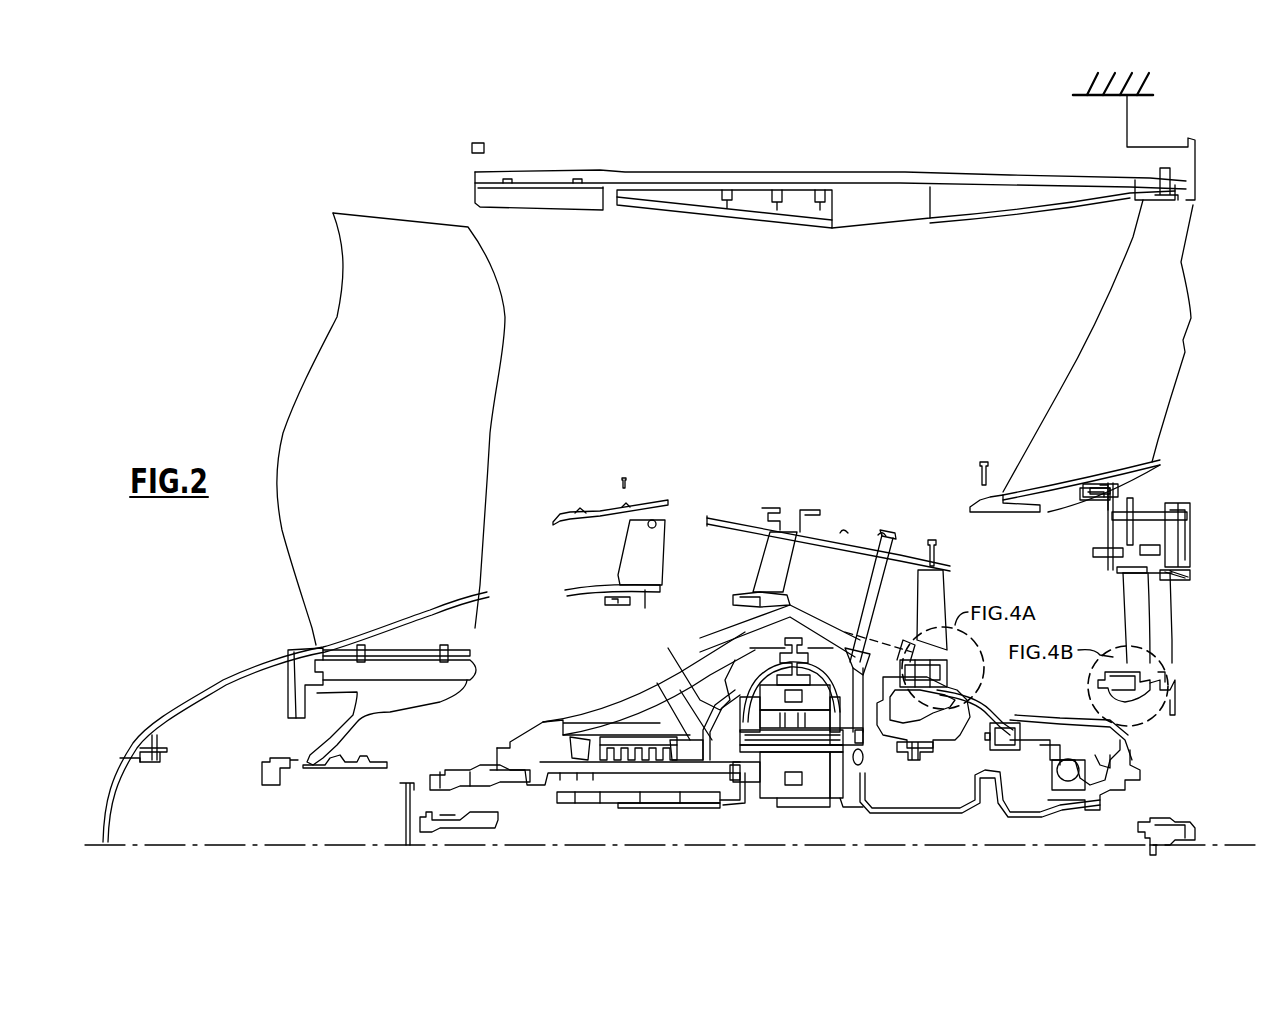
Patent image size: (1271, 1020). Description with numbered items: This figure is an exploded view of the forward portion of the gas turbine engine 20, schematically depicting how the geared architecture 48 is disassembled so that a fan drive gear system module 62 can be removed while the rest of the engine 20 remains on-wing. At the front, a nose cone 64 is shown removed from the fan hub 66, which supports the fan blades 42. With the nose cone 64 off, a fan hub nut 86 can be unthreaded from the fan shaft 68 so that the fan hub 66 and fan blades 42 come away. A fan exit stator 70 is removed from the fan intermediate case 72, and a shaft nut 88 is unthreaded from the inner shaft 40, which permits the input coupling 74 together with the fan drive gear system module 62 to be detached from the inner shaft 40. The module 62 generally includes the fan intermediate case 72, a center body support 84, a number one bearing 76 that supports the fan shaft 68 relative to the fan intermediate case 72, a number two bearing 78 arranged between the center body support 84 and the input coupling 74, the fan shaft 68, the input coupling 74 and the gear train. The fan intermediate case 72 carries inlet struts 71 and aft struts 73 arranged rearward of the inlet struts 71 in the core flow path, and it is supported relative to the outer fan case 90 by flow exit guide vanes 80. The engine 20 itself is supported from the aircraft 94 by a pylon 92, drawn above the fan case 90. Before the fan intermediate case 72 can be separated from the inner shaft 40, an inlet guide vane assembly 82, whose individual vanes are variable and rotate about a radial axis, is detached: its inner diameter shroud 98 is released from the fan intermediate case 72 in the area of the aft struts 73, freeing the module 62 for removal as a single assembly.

The gas turbine engine 20 is at (700, 150).
The inner shaft 40 is at (1185, 820).
The fan blades 42 is at (412, 440).
The geared architecture 48 is at (828, 815).
The fan drive gear system module 62 is at (1125, 855).
The nose cone 64 is at (222, 677).
The fan hub 66 is at (405, 700).
The fan shaft 68 is at (490, 782).
The fan exit stator 70 is at (630, 555).
The inlet struts 71 is at (766, 580).
The fan intermediate case 72 is at (829, 538).
The aft struts 73 is at (936, 588).
The input coupling 74 is at (905, 805).
The number one bearing 76 is at (632, 704).
The number two bearing 78 is at (1112, 743).
The flow exit guide vanes 80 is at (1163, 326).
The inlet guide vane assembly 82 is at (1158, 622).
The center body support 84 is at (1000, 716).
The fan hub nut 86 is at (283, 775).
The shaft nut 88 is at (468, 833).
The fan case 90 is at (936, 177).
The pylon 92 is at (1128, 128).
The aircraft 94 is at (1092, 96).
The inner diameter shroud 98 is at (1155, 691).